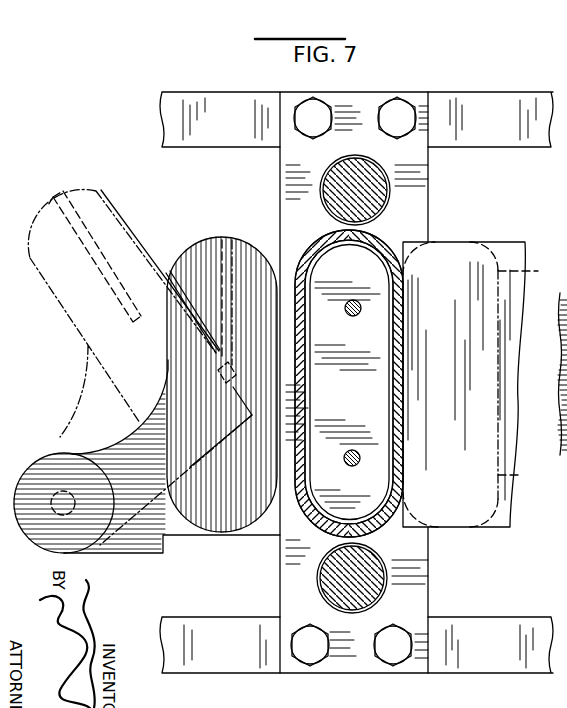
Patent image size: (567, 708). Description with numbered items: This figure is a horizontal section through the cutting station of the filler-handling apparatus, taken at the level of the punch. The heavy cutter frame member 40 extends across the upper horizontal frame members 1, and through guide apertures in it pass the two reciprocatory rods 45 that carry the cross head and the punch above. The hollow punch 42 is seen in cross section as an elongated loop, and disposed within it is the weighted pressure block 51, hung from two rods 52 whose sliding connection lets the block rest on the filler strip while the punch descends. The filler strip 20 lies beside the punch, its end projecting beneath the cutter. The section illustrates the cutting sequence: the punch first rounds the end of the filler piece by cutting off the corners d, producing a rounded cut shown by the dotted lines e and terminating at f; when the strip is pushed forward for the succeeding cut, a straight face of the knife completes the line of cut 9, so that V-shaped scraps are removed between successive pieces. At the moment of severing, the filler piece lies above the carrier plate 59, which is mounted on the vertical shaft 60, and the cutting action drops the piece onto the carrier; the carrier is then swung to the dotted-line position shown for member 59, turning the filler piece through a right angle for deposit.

The upper horizontal frame member 1 is at (356, 382).
The reciprocatory rod 45 is at (378, 179).
The cutter frame member 40 is at (356, 395).
The punch 42 is at (322, 250).
The weighted pressure block 51 is at (349, 382).
The rod 52 is at (358, 316).
The filler strip 20 is at (464, 384).
The corner d is at (428, 530).
The rounded cut e is at (496, 529).
The termination of rounded cut f is at (522, 369).
The line of cut 9 is at (500, 340).
The carrier plate 59 is at (150, 238).
The vertical shaft 60 is at (50, 527).